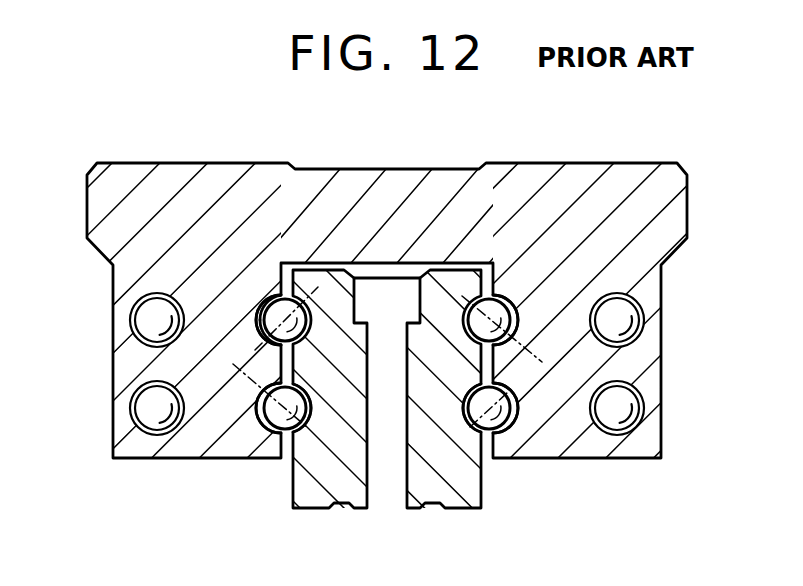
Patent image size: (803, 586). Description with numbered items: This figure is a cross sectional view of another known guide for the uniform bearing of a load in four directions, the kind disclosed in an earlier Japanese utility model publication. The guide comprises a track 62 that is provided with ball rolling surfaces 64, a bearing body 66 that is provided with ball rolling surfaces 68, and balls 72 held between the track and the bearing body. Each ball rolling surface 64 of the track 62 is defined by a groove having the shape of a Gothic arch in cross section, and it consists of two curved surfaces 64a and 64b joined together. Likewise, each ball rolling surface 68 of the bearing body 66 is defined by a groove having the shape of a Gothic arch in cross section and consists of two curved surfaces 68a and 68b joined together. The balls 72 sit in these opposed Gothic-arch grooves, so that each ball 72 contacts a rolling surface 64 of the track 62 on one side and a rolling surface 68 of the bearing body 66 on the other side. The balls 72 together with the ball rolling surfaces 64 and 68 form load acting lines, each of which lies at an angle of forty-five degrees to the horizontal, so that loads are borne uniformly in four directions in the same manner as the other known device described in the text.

The track 62 is at (387, 500).
The ball rolling surface 64 is at (467, 298).
The curved surface 64a is at (268, 430).
The curved surface 64b is at (306, 420).
The bearing body 66 is at (342, 164).
The ball rolling surface 68 is at (277, 292).
The curved surface 68a is at (262, 305).
The curved surface 68b is at (262, 334).
The balls 72 is at (247, 378).